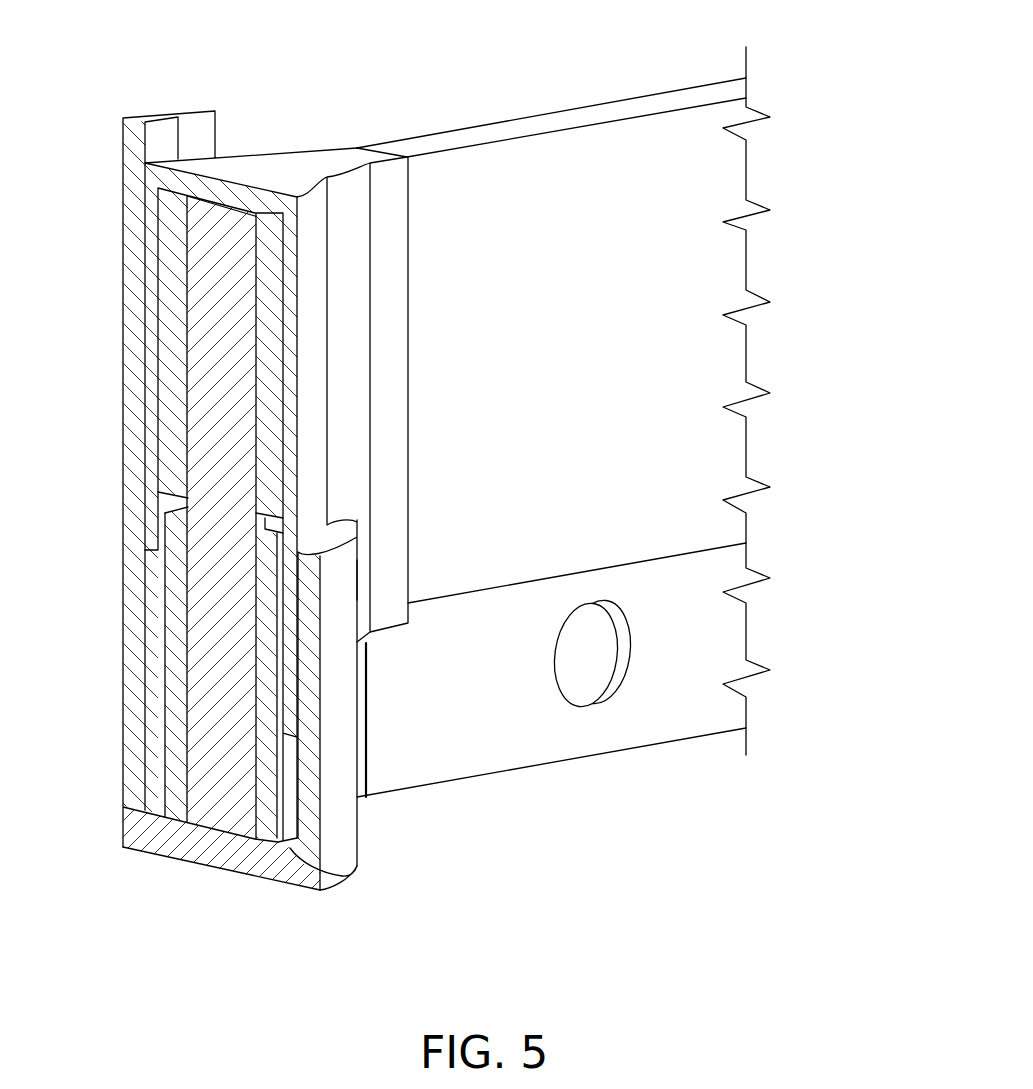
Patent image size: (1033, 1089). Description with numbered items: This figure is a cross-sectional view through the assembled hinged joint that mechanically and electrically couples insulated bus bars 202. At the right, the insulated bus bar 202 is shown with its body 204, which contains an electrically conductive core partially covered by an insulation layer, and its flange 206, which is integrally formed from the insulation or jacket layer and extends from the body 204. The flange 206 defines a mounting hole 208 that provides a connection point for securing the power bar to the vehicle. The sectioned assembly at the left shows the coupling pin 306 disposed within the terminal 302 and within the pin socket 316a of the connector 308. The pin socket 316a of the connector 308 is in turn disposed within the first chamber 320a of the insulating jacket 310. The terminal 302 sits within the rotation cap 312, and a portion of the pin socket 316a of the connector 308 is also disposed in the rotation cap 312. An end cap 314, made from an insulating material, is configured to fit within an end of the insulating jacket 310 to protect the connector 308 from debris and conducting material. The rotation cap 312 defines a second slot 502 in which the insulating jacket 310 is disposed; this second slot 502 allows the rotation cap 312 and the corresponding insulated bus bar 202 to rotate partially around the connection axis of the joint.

The insulated bus bar 202 is at (572, 105).
The body 204 is at (662, 130).
The flange 206 is at (570, 741).
The mounting hole 208 is at (636, 652).
The terminal 302 is at (168, 310).
The coupling pin 306 is at (222, 228).
The connector 308 is at (153, 645).
The insulating jacket 310 is at (347, 826).
The rotation cap 312 is at (327, 168).
The end cap 314 is at (303, 890).
The pin socket 316a is at (173, 530).
The first chamber 320a is at (340, 877).
The second slot 502 is at (362, 579).